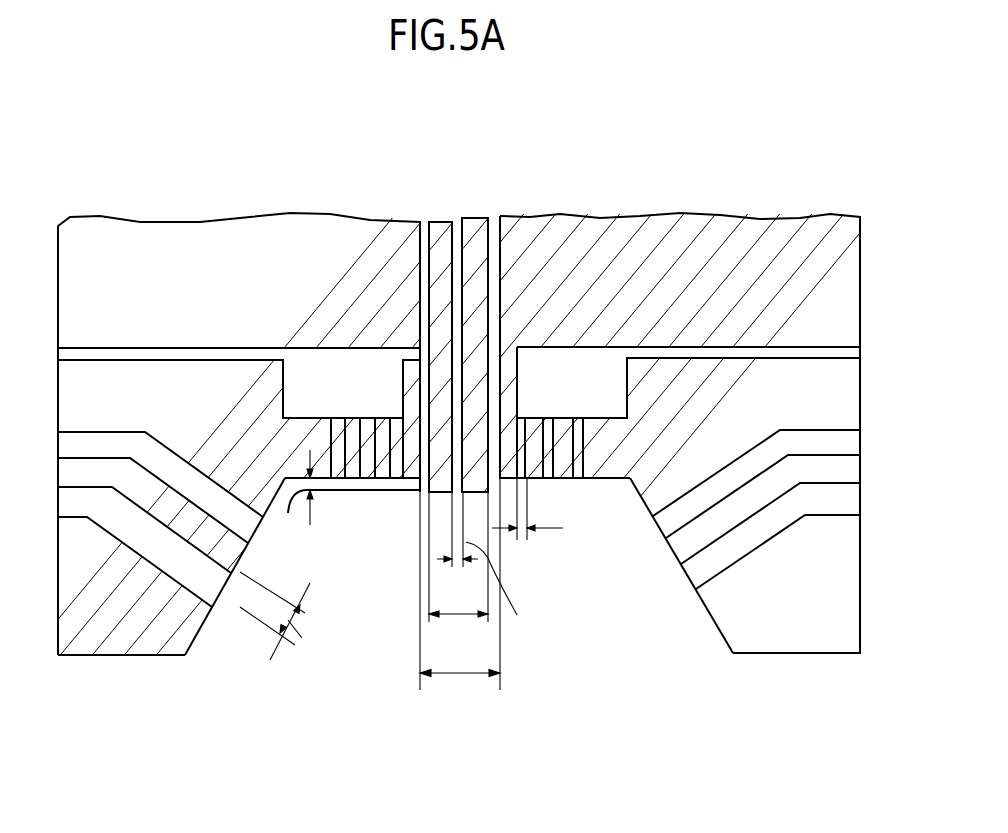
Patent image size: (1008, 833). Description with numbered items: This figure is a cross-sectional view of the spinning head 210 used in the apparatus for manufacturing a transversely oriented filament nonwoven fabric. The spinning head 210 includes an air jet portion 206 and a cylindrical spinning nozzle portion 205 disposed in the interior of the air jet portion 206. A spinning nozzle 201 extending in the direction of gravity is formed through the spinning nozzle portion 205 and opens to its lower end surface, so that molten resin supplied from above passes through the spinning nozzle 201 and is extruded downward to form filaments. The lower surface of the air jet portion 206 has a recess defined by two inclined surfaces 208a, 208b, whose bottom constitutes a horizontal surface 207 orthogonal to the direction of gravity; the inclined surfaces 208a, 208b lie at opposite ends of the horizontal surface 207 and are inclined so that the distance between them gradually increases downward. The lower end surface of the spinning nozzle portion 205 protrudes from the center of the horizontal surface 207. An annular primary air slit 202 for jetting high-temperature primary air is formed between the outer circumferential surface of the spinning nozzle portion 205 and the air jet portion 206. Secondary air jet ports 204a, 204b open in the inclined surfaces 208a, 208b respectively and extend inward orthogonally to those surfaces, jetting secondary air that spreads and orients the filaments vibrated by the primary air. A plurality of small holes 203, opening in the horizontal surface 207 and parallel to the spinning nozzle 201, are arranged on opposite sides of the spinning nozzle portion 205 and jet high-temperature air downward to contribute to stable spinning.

The spinning head 210 is at (168, 204).
The air jet portion 206 is at (255, 220).
The horizontal surface 207 is at (565, 480).
The primary air slit 202 is at (493, 220).
The small holes 203 is at (392, 418).
The spinning nozzle 201 is at (475, 480).
The spinning nozzle portion 205 is at (473, 494).
The secondary air jet port 204a is at (688, 583).
The secondary air jet port 204b is at (250, 528).
The inclined surface 208a is at (718, 635).
The inclined surface 208b is at (203, 630).